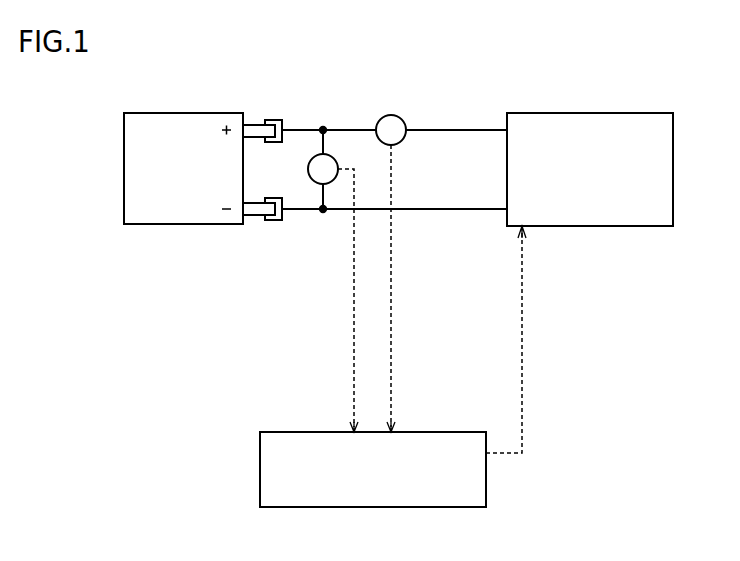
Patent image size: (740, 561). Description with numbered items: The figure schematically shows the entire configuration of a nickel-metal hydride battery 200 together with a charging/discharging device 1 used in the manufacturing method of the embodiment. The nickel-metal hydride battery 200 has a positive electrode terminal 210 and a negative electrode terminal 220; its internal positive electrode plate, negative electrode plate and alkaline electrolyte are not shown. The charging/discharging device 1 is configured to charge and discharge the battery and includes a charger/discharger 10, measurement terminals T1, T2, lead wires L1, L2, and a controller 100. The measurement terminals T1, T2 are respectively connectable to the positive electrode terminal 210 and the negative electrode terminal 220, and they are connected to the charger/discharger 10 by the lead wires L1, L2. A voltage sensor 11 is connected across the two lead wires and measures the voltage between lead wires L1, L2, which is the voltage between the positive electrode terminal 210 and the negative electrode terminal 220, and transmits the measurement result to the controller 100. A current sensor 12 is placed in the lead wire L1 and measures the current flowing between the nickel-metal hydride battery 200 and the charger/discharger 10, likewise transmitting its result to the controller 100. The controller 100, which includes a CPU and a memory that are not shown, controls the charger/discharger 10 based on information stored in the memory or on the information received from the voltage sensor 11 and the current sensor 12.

The charging/discharging device 1 is at (473, 58).
The charger/discharger 10 is at (624, 113).
The voltage sensor 11 is at (331, 158).
The current sensor 12 is at (397, 116).
The controller 100 is at (430, 508).
The nickel-metal hydride battery 200 is at (146, 113).
The positive electrode terminal 210 is at (253, 124).
The negative electrode terminal 220 is at (253, 219).
The measurement terminal T1 is at (273, 120).
The measurement terminal T2 is at (273, 222).
The lead wire L1 is at (443, 129).
The lead wire L2 is at (443, 211).